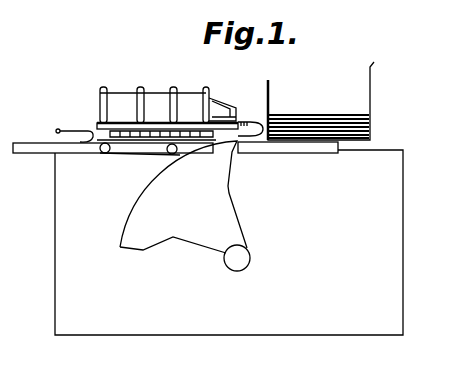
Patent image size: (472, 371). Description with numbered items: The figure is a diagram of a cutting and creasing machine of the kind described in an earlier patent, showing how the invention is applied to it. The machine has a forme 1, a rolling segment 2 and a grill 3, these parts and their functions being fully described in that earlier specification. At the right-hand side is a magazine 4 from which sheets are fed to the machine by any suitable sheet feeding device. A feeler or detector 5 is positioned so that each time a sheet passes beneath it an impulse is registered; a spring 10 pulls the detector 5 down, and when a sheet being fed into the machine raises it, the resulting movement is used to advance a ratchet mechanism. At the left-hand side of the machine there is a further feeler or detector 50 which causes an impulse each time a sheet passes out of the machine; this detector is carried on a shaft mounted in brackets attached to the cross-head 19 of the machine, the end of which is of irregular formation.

The forme 1 is at (116, 105).
The cross-head 19 is at (155, 100).
The spring 10 is at (249, 120).
The feeler or detector 5 is at (241, 135).
The magazine 4 is at (325, 117).
The feeler or detector 50 is at (72, 130).
The grill 3 is at (300, 150).
The rolling segment 2 is at (222, 203).